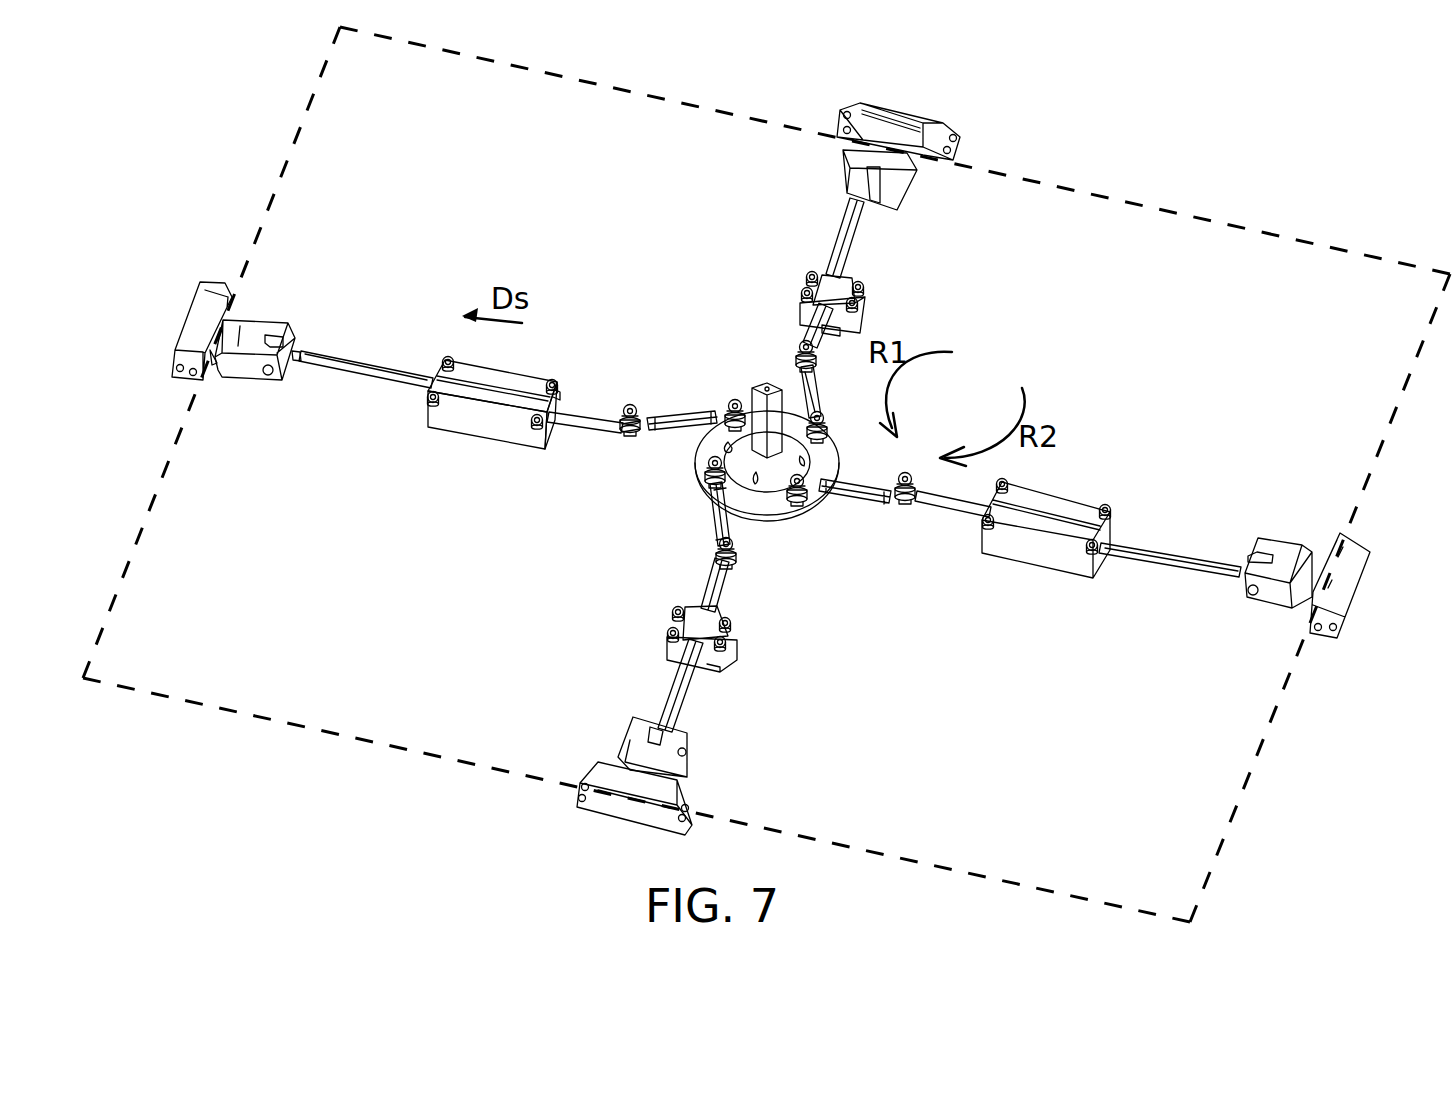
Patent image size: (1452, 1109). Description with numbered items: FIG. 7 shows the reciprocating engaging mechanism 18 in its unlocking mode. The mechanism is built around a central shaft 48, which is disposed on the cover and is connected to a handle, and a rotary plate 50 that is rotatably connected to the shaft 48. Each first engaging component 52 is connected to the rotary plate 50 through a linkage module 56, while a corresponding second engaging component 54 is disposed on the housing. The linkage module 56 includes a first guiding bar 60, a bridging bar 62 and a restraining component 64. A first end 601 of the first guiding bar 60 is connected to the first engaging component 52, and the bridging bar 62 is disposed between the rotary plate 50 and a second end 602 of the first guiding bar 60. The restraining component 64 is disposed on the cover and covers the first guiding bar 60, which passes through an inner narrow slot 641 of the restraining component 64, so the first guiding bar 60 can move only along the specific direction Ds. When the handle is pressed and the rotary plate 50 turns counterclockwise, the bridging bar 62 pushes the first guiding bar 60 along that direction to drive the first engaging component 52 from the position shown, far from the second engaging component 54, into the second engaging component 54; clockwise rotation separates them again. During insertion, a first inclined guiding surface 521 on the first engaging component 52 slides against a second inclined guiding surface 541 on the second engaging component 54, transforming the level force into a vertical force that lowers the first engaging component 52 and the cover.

The reciprocating engaging mechanism 18 is at (1263, 158).
The shaft 48 is at (765, 385).
The rotary plate 50 is at (768, 500).
The first engaging component 52 is at (763, 463).
The first inclined guiding surface 521 is at (237, 332).
The second engaging component 54 is at (770, 470).
The second inclined guiding surface 541 is at (213, 360).
The linkage module 56 is at (504, 435).
The first guiding bar 60 is at (457, 395).
The first end 601 is at (308, 348).
The second end 602 is at (611, 400).
The bridging bar 62 is at (614, 438).
The restraining component 64 is at (520, 428).
The inner narrow slot 641 is at (555, 398).